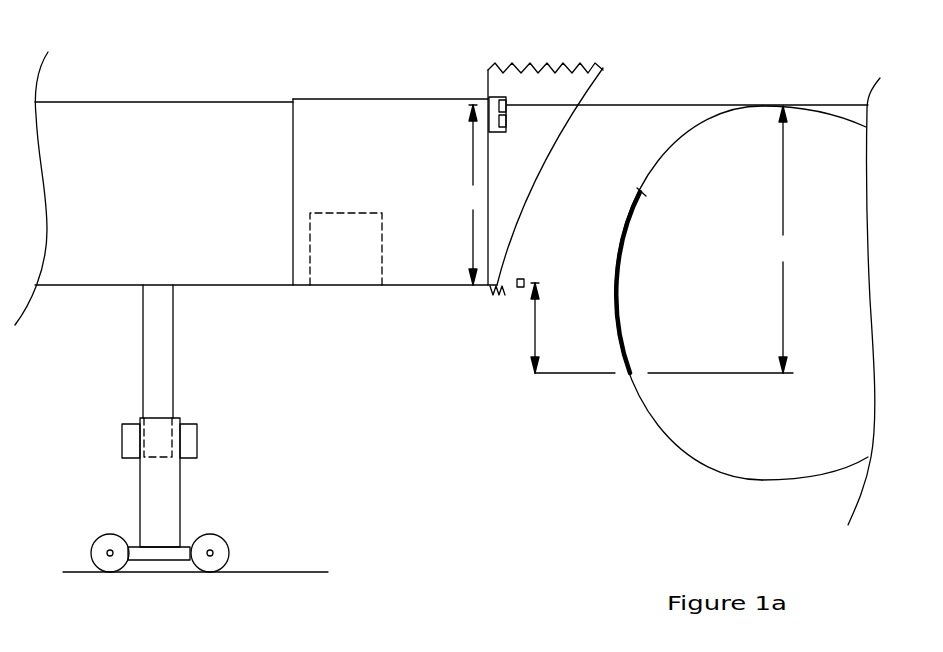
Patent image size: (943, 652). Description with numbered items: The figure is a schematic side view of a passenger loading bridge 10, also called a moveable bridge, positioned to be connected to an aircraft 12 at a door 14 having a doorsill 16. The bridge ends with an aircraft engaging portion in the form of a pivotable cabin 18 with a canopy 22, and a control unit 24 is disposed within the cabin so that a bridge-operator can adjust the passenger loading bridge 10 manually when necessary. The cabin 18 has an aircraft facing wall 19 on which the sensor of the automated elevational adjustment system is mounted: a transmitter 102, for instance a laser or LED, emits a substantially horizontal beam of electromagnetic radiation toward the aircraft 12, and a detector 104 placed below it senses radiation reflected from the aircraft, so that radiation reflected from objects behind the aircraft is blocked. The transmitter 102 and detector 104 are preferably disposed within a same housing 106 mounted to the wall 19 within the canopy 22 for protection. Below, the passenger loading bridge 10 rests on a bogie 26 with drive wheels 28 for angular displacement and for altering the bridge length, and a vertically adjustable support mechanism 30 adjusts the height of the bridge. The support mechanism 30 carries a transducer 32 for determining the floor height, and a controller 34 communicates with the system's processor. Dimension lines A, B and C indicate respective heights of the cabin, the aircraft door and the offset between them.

The passenger loading bridge 10 is at (200, 122).
The pivotable cabin 18 is at (365, 122).
The control unit 24 is at (340, 262).
The aircraft facing wall 19 is at (490, 225).
The canopy 22 is at (603, 69).
The transmitter 102 is at (507, 107).
The detector 104 is at (507, 125).
The housing 106 is at (490, 132).
The doorsill 16 is at (632, 377).
The aircraft 12 is at (713, 442).
The door 14 is at (615, 313).
The vertically adjustable support mechanism 30 is at (143, 392).
The transducer 32 is at (122, 445).
The controller 34 is at (197, 443).
The bogie 26 is at (163, 560).
The drive wheels 28 is at (91, 557).
The dimension A is at (470, 195).
The dimension B is at (780, 239).
The dimension C is at (525, 328).